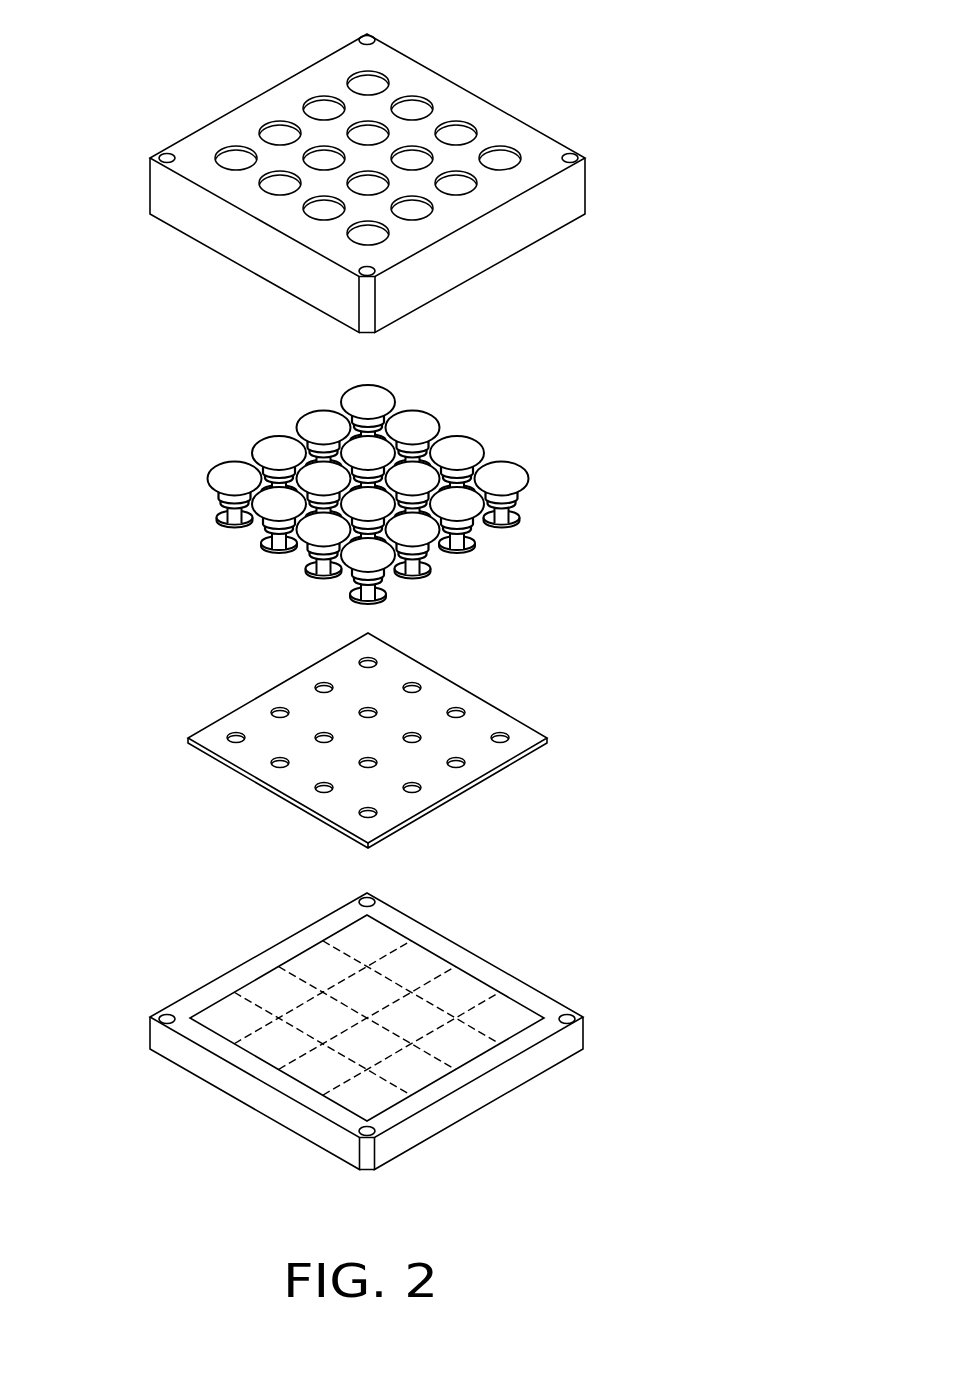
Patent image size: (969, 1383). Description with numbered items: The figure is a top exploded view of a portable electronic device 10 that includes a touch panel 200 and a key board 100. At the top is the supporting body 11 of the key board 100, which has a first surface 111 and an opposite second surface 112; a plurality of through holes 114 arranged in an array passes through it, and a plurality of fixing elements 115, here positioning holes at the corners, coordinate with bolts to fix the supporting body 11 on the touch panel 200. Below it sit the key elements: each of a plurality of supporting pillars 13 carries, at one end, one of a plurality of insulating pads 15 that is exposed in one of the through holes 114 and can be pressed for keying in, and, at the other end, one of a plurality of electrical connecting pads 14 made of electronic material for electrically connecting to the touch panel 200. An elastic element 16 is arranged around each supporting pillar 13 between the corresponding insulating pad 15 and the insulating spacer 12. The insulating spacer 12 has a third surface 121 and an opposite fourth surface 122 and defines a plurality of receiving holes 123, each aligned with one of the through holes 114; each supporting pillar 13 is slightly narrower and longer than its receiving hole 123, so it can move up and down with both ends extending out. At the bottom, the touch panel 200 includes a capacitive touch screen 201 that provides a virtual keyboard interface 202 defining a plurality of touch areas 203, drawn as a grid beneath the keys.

The portable electronic device 10 is at (149, 28).
The key board 100 is at (635, 337).
The supporting body 11 is at (518, 303).
The first surface 111 is at (270, 294).
The second surface 112 is at (495, 120).
The through holes 114 is at (412, 108).
The fixing elements 115 is at (370, 42).
The insulating pads 15 is at (458, 447).
The elastic elements 16 is at (559, 472).
The supporting pillars 13 is at (564, 494).
The electrical connecting pads 14 is at (535, 524).
The insulating spacer 12 is at (508, 633).
The third surface 121 is at (515, 730).
The fourth surface 122 is at (515, 781).
The receiving holes 123 is at (236, 733).
The touch panel 200 is at (497, 928).
The capacitive touch screen 201 is at (533, 997).
The virtual keyboard interface 202 is at (342, 928).
The touch areas 203 is at (275, 985).